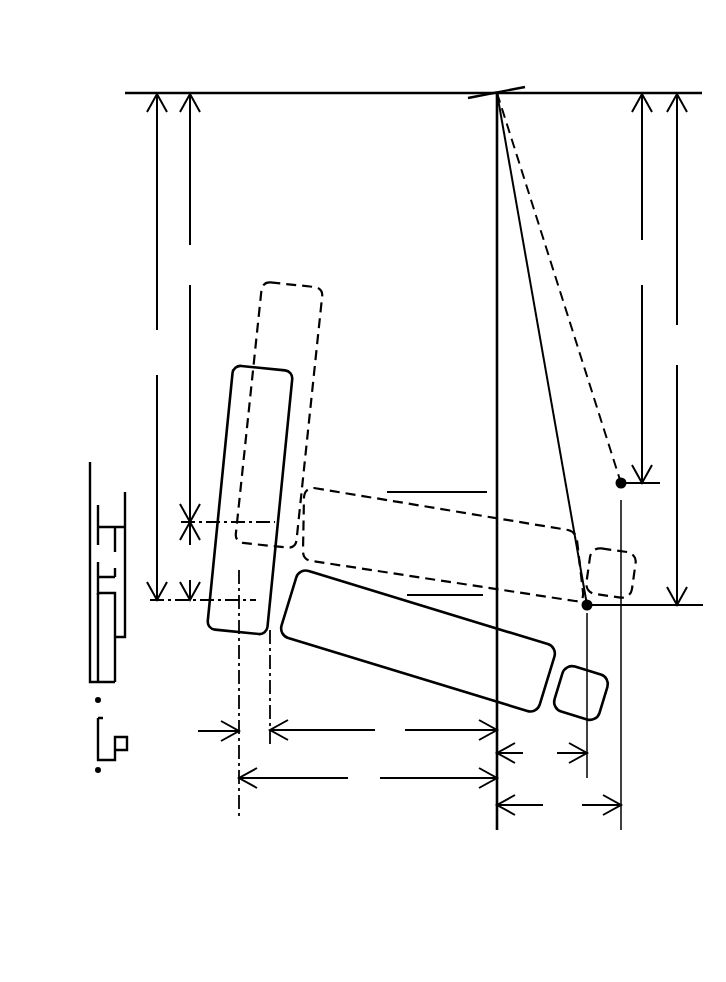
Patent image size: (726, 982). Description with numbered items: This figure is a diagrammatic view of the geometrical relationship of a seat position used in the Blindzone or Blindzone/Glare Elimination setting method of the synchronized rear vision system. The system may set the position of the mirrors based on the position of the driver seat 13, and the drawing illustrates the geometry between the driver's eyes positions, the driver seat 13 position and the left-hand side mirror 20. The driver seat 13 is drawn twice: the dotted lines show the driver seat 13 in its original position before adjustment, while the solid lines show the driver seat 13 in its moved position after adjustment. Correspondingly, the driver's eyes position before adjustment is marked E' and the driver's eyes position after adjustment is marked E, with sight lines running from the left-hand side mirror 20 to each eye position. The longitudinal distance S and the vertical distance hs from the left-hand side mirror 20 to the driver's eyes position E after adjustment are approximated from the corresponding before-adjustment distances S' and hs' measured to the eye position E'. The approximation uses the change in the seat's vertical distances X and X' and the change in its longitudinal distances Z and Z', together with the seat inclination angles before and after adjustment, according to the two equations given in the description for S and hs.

The left-hand side mirror 20 is at (505, 90).
The driver seat 13 is at (370, 648).
The driver's eyes position after seat adjustment E is at (627, 690).
The driver's eyes position before seat adjustment E' is at (623, 655).
The vertical distance X is at (157, 347).
The vertical distance X' is at (190, 308).
The longitudinal distance Z is at (368, 778).
The longitudinal distance Z' is at (383, 731).
The longitudinal distance S is at (677, 349).
The longitudinal distance S' is at (642, 288).
The vertical distance hs is at (542, 751).
The vertical distance hs' is at (559, 806).